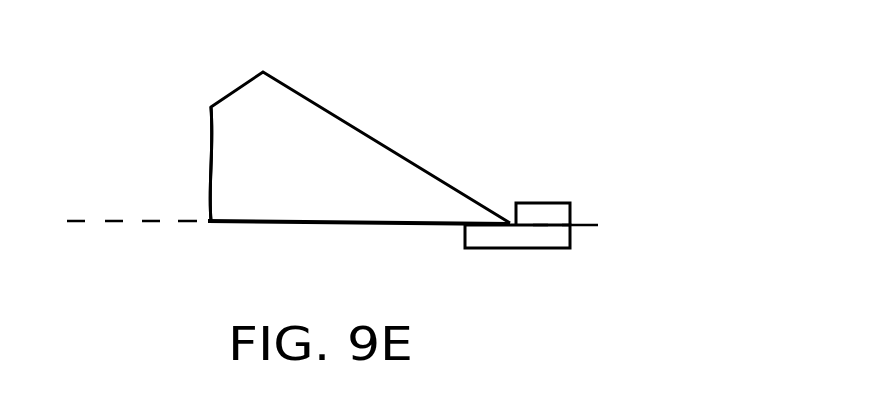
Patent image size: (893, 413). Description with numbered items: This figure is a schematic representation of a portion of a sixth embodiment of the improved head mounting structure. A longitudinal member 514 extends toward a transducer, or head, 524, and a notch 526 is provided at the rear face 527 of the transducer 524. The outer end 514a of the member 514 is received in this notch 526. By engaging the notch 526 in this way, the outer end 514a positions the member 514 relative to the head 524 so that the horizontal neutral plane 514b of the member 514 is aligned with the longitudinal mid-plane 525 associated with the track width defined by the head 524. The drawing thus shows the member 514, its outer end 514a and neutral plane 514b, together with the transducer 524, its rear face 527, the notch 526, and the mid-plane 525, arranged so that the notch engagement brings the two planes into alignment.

The member 514 is at (290, 130).
The outer end 514a is at (427, 204).
The neutral plane 514b is at (112, 221).
The transducer 524 is at (533, 248).
The longitudinal mid-plane 525 is at (585, 225).
The notch 526 is at (493, 207).
The rear face 527 is at (514, 219).